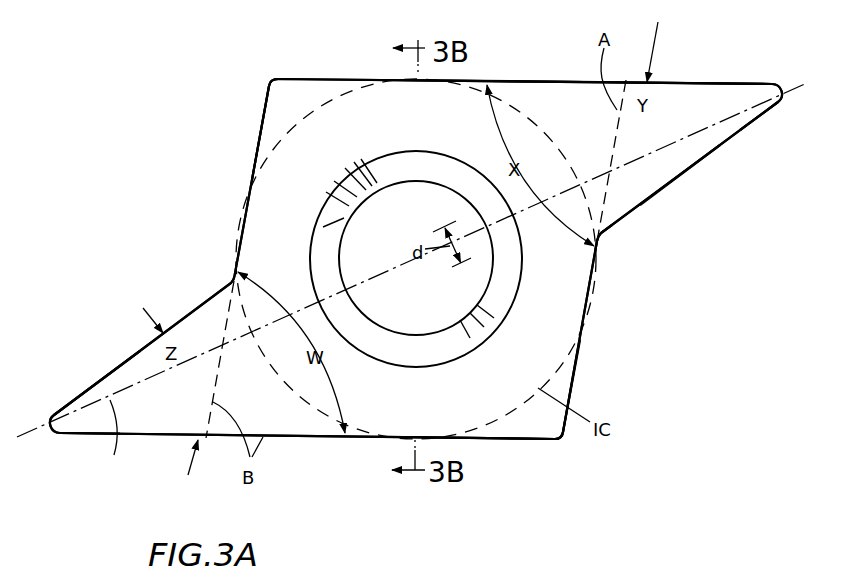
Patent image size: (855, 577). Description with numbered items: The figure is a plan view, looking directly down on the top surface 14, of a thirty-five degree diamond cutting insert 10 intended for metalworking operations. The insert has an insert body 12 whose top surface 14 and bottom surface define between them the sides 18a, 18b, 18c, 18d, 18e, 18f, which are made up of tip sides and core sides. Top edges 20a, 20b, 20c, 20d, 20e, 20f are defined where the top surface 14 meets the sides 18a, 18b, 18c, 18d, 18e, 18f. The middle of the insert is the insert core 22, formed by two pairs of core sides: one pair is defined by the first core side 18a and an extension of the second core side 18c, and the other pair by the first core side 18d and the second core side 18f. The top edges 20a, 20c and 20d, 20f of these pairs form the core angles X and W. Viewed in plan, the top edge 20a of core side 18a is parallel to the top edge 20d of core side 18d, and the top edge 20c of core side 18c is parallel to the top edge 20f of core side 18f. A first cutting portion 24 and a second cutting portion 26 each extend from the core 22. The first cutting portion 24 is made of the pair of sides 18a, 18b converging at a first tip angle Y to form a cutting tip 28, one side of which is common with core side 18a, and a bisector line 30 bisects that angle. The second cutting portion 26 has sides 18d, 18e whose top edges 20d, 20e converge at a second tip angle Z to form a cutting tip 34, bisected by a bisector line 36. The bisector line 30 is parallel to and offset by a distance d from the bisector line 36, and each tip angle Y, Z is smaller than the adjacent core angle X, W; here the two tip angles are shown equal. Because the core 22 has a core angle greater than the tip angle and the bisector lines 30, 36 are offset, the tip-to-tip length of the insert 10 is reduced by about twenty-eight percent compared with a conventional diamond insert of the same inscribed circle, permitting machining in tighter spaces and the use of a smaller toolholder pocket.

The cutting insert 10 is at (240, 40).
The insert body 12 is at (308, 92).
The top surface 14 is at (290, 150).
The first core side 18a is at (707, 82).
The side 18b is at (723, 147).
The second core side 18c is at (578, 348).
The first core side 18d is at (520, 443).
The side 18e is at (97, 383).
The second core side 18f is at (243, 236).
The top edge 20a is at (718, 83).
The top edge 20b is at (670, 185).
The top edge 20c is at (577, 363).
The top edge 20d is at (507, 443).
The top edge 20e is at (122, 366).
The top edge 20f is at (256, 152).
The insert core 22 is at (548, 80).
The first cutting portion 24 is at (763, 107).
The second cutting portion 26 is at (75, 405).
The cutting tip 28 is at (773, 83).
The bisector line 30 is at (642, 150).
The cutting tip 34 is at (80, 437).
The bisector line 36 is at (111, 444).